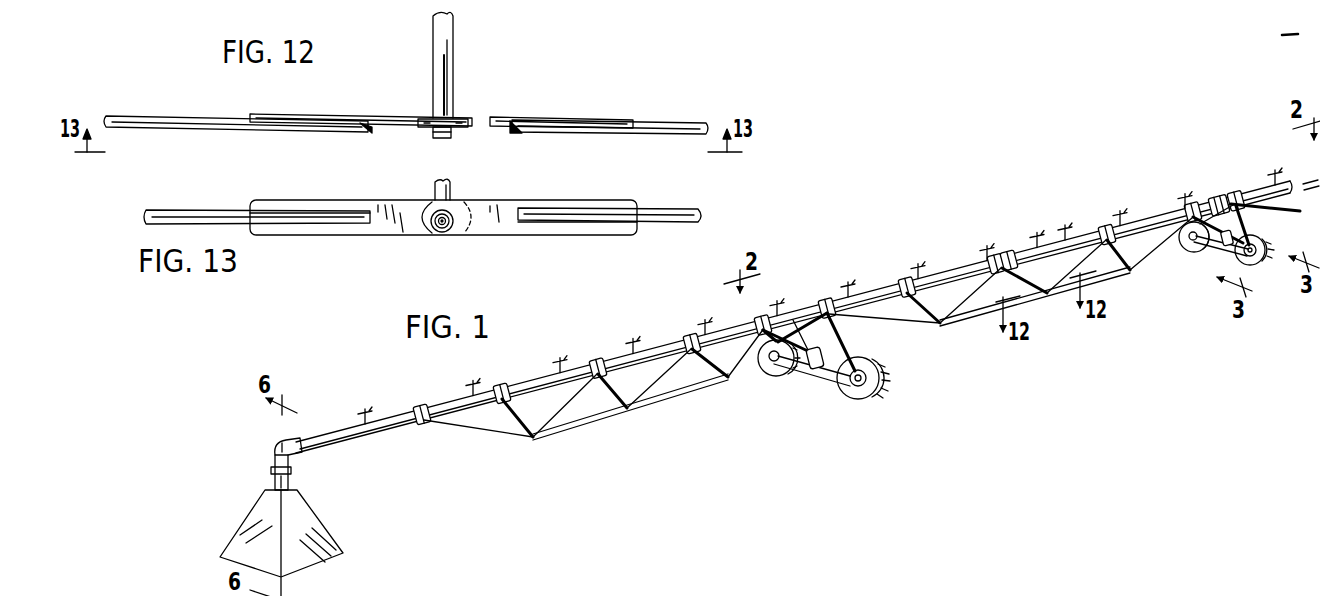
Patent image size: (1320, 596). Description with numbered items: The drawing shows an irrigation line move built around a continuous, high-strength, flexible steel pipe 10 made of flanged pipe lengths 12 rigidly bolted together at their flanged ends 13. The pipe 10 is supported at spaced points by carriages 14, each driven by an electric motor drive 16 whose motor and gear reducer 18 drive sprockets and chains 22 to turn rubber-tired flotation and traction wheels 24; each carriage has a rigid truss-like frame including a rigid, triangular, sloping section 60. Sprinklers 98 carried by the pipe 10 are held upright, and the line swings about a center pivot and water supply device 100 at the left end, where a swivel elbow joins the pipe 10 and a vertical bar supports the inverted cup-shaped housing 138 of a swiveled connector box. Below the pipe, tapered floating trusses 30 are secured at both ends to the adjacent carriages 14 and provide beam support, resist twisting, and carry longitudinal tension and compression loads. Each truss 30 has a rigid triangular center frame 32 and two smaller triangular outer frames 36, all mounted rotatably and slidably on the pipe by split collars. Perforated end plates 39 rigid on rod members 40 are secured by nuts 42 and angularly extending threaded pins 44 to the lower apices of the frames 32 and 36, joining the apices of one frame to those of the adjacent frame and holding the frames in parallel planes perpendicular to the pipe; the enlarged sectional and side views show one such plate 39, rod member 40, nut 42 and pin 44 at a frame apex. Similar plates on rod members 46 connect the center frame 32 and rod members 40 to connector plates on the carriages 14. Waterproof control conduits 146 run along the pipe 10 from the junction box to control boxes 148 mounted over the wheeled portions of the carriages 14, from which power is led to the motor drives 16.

In FIG. 1, the flexible steel pipe 10 is at (807, 316).
In FIG. 1, the flanged pipe lengths 12 is at (558, 372).
In FIG. 1, the flanged ends 13 is at (689, 344).
In FIG. 1, the carriages 14 is at (1035, 309).
In FIG. 1, the electric motor drive 16 is at (823, 374).
In FIG. 1, the gear reducer 18 is at (842, 350).
In FIG. 1, the chains 22 is at (870, 352).
In FIG. 1, the flotation and traction wheels 24 is at (882, 394).
In FIG. 1, the floating trusses 30 is at (808, 344).
In FIG. 12, the center frame 32 is at (452, 84).
In FIG. 13, the center frame 32 is at (433, 192).
In FIG. 1, the center frame 32 is at (614, 391).
In FIG. 1, the outer frames 36 is at (524, 426).
In FIG. 12, the perforated end plates 39 is at (407, 116).
In FIG. 13, the perforated end plates 39 is at (404, 236).
In FIG. 12, the rod members 40 is at (213, 118).
In FIG. 13, the rod members 40 is at (213, 210).
In FIG. 1, the rod members 40 is at (549, 434).
In FIG. 12, the nuts 42 is at (437, 132).
In FIG. 13, the nuts 42 is at (448, 229).
In FIG. 12, the threaded pins 44 is at (451, 136).
In FIG. 13, the threaded pins 44 is at (446, 214).
In FIG. 1, the rod members 46 is at (482, 434).
In FIG. 1, the sloping section 60 is at (793, 322).
In FIG. 1, the sprinklers 98 is at (372, 407).
In FIG. 1, the center pivot and water supply device 100 is at (261, 487).
In FIG. 1, the inverted cup-shaped housing 138 is at (278, 442).
In FIG. 1, the control conduits 146 is at (298, 440).
In FIG. 1, the control boxes 148 is at (1216, 196).